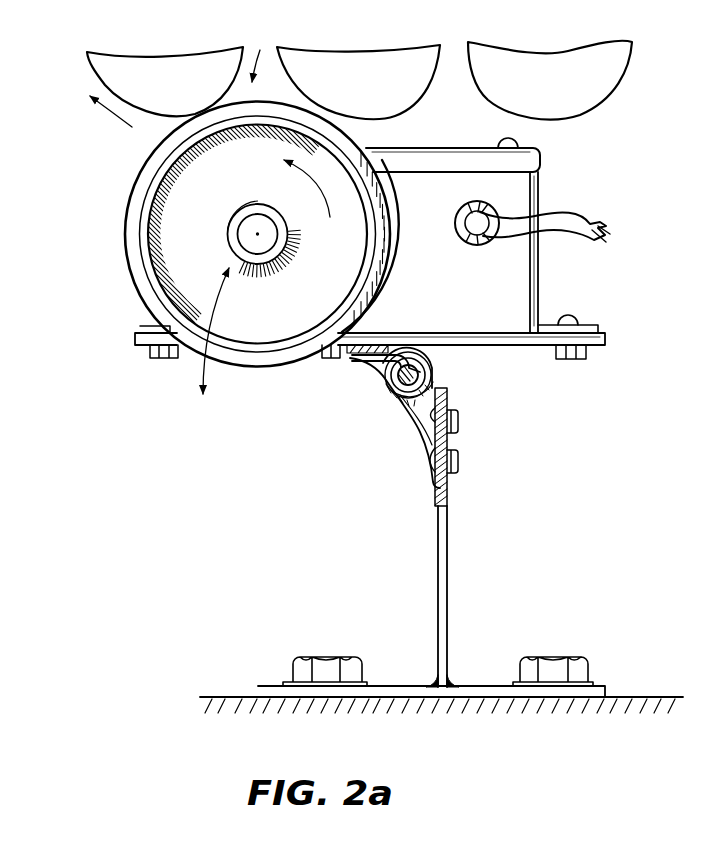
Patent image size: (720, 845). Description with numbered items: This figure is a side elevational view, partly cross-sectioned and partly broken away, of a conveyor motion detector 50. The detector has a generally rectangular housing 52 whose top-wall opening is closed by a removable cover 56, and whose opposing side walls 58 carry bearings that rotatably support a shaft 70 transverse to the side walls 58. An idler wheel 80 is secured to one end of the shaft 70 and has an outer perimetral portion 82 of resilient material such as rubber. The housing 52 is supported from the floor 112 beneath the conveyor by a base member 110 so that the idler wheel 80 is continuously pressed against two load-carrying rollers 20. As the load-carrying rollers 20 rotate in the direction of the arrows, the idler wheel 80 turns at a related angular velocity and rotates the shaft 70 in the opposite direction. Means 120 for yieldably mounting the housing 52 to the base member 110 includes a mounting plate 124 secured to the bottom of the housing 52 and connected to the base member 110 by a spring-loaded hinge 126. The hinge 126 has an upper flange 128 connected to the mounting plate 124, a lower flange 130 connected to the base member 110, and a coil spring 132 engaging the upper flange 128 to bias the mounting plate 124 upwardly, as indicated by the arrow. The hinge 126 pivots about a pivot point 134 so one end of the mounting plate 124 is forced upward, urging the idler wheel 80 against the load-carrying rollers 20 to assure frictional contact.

The load-carrying rollers 20 is at (105, 68).
The motion detector 50 is at (92, 201).
The housing 52 is at (488, 224).
The removable cover 56 is at (457, 158).
The side walls 58 is at (510, 314).
The shaft 70 is at (249, 234).
The idler wheel 80 is at (185, 268).
The outer perimetral portion 82 is at (133, 260).
The base member 110 is at (452, 545).
The floor 112 is at (231, 695).
The means for yieldably mounting 120 is at (432, 398).
The mounting plate 124 is at (146, 345).
The spring-loaded hinge 126 is at (407, 413).
The upper flange 128 is at (334, 339).
The lower flange 130 is at (433, 481).
The coil spring 132 is at (402, 355).
The pivot point 134 is at (424, 367).